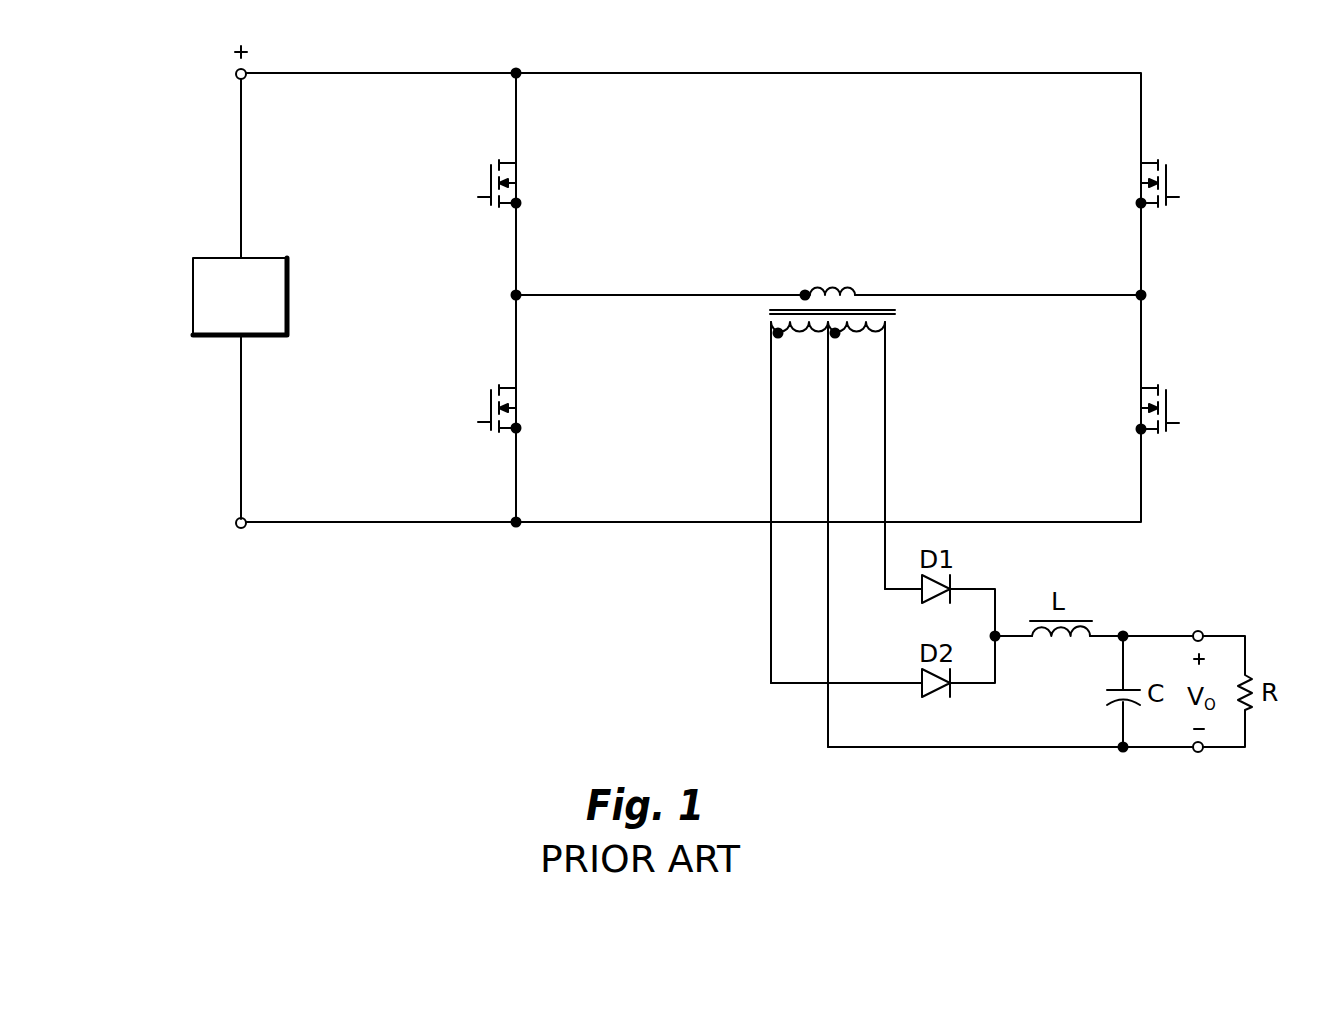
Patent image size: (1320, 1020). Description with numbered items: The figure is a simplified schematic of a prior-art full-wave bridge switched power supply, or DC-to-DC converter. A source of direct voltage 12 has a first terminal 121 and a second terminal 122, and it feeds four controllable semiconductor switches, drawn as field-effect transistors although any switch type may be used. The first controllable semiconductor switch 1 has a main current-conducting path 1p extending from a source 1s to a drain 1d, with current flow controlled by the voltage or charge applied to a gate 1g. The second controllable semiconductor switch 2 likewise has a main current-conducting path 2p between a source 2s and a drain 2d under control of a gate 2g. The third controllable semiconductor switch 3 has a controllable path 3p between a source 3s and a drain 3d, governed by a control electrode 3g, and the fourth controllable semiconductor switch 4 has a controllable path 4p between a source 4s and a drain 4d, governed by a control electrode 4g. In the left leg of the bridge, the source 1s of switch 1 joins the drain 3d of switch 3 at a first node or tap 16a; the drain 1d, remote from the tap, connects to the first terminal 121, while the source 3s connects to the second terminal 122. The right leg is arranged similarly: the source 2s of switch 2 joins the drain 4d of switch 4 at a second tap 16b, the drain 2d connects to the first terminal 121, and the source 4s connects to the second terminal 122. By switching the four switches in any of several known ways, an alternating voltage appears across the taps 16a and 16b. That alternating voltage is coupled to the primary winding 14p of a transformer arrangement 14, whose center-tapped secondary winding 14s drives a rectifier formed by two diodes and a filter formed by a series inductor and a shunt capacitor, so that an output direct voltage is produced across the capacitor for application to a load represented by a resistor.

The first controllable semiconductor switch 1 is at (472, 162).
The drain of switch 1 1d is at (514, 162).
The gate of switch 1 1g is at (478, 197).
The main current-conducting path of switch 1 1p is at (510, 181).
The source of switch 1 1s is at (514, 208).
The second controllable semiconductor switch 2 is at (1174, 166).
The drain of switch 2 2d is at (1138, 162).
The gate of switch 2 2g is at (1188, 190).
The main current-conducting path of switch 2 2p is at (1148, 181).
The source of switch 2 2s is at (1138, 206).
The third controllable semiconductor switch 3 is at (462, 388).
The drain of switch 3 3d is at (512, 387).
The control electrode of switch 3 3g is at (478, 422).
The controllable path of switch 3 3p is at (510, 405).
The source of switch 3 3s is at (513, 434).
The fourth controllable semiconductor switch 4 is at (1172, 385).
The drain of switch 4 4d is at (1136, 385).
The control electrode of switch 4 4g is at (1170, 424).
The controllable path of switch 4 4p is at (1148, 405).
The source of switch 4 4s is at (1136, 433).
The source of direct voltage 12 is at (290, 305).
The first terminal of direct voltage source 121 is at (246, 79).
The second terminal of direct voltage source 122 is at (246, 518).
The transformer arrangement 14 is at (846, 469).
The primary winding 14p is at (840, 293).
The center-tapped secondary winding 14s is at (857, 334).
The first node or tap 16a is at (485, 294).
The second tap 16b is at (1138, 293).